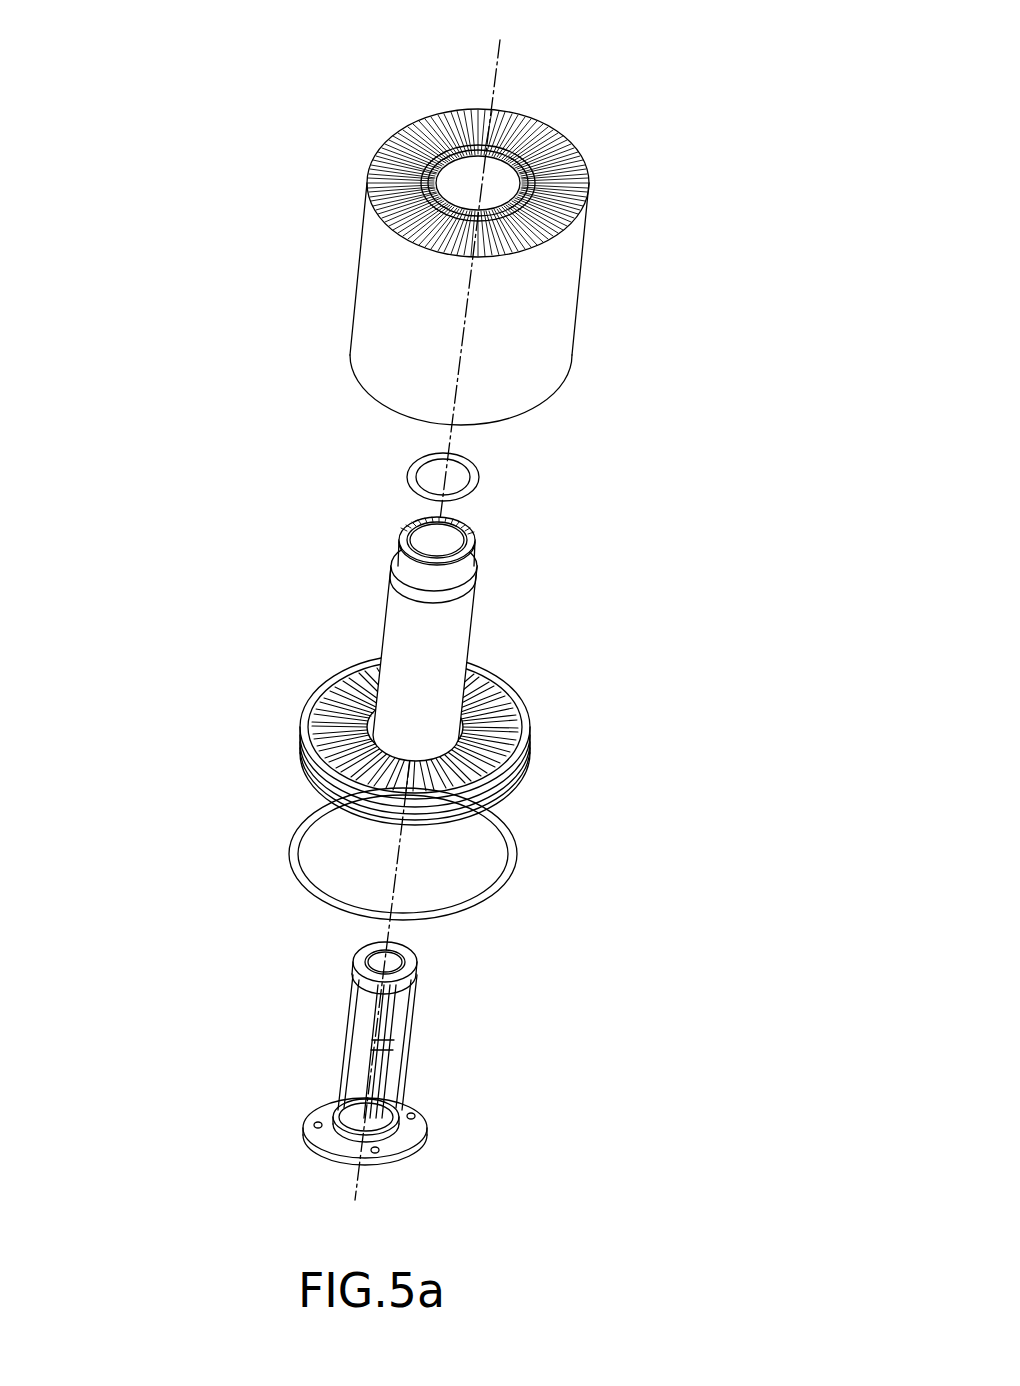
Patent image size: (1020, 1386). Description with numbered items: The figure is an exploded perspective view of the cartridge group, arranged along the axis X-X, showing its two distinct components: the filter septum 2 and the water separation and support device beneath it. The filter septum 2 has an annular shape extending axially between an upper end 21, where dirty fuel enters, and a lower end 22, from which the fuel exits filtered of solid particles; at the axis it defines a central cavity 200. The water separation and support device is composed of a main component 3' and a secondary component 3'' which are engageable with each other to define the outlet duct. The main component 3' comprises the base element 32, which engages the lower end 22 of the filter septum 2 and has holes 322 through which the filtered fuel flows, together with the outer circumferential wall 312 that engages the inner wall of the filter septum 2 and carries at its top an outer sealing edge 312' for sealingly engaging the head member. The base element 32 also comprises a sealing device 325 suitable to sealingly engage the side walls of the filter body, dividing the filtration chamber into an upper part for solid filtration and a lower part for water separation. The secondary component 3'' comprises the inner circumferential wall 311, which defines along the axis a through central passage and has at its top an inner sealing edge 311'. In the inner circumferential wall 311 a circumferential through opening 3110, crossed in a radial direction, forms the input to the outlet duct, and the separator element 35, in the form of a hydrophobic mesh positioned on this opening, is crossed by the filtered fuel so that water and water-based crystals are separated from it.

The filter septum 2 is at (542, 257).
The upper end 21 is at (588, 178).
The lower end 22 is at (540, 408).
The central cavity 200 is at (466, 180).
The main component 3' is at (437, 701).
The secondary component 3'' is at (388, 1013).
The base element 32 is at (408, 791).
The outer circumferential wall 312 is at (306, 617).
The outer sealing edge 312' is at (356, 520).
The holes 322 is at (523, 762).
The sealing device 325 is at (528, 876).
The inner circumferential wall 311 is at (328, 1013).
The inner sealing edge 311' is at (295, 928).
The separator element 35 is at (354, 1033).
The through opening 3110 is at (350, 1072).